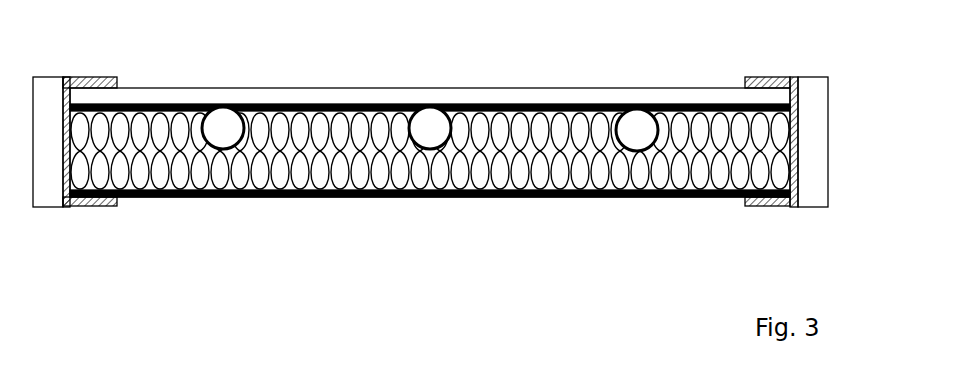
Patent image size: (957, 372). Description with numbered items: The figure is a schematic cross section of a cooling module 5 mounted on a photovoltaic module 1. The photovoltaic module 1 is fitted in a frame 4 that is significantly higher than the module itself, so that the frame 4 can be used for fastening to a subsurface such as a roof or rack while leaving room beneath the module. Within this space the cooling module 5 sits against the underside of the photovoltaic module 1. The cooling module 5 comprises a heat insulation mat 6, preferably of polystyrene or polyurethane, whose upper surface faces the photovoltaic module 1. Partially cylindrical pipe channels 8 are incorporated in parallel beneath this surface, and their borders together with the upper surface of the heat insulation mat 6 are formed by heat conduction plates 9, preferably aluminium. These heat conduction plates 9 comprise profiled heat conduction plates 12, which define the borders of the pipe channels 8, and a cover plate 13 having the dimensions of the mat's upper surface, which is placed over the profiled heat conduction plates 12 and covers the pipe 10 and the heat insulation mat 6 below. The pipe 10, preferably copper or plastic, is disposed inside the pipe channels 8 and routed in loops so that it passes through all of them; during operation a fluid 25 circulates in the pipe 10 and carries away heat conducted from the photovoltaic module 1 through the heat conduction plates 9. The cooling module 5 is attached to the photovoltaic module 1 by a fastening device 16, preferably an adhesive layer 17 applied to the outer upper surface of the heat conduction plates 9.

The photovoltaic module 1 is at (693, 100).
The frame 4 is at (768, 80).
The cooling module 5 is at (461, 118).
The heat insulation mat 6 is at (708, 177).
The pipe channels 8 is at (326, 185).
The heat conduction plates 9 is at (430, 147).
The pipe 10 is at (326, 185).
The profiled heat conduction plates 12 is at (620, 150).
The cover plate 13 is at (588, 105).
The fastening device 16 is at (430, 113).
The adhesive layer 17 is at (347, 105).
The fluid 25 is at (428, 133).